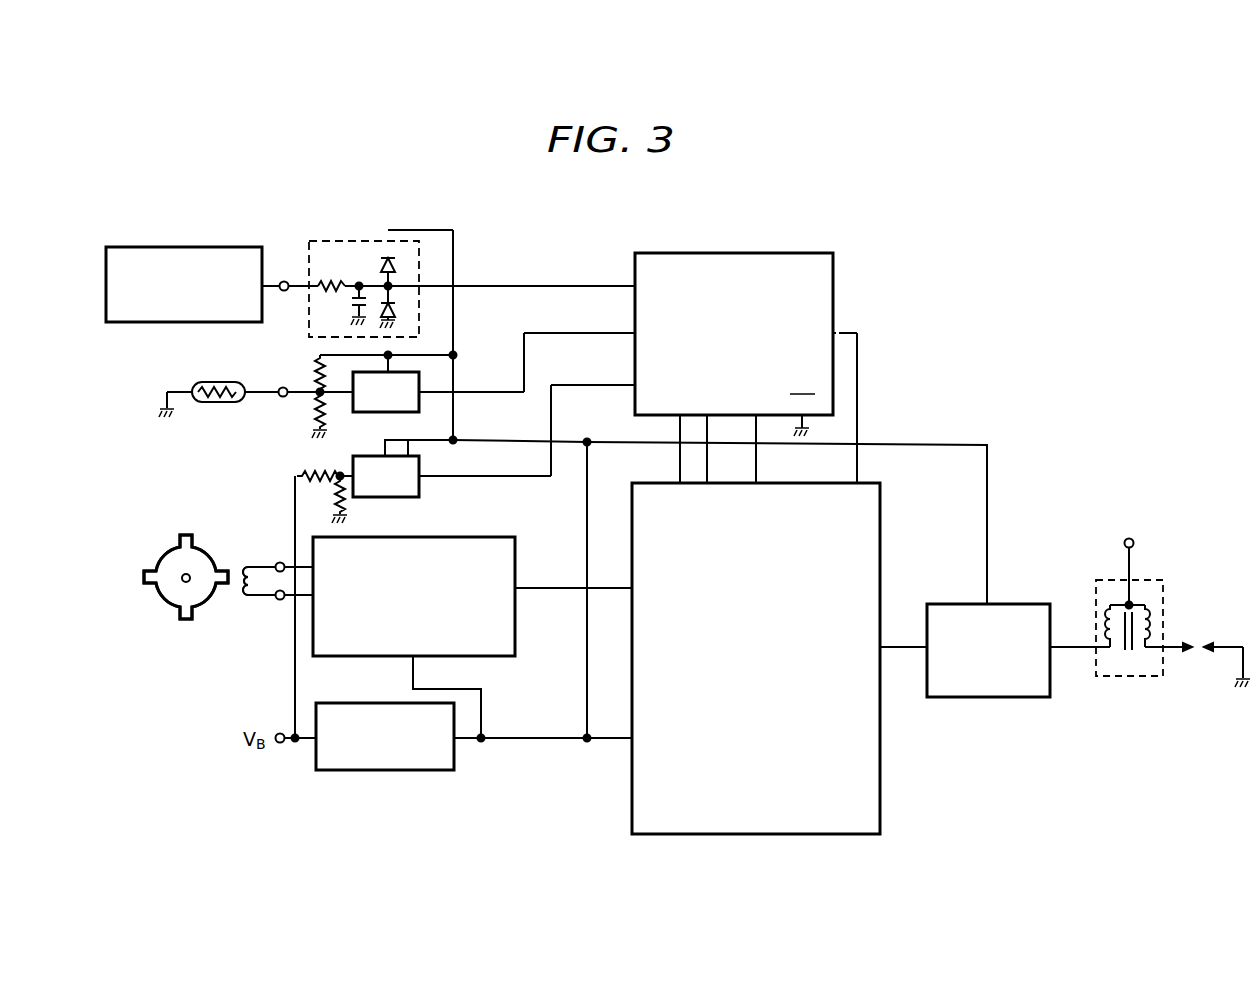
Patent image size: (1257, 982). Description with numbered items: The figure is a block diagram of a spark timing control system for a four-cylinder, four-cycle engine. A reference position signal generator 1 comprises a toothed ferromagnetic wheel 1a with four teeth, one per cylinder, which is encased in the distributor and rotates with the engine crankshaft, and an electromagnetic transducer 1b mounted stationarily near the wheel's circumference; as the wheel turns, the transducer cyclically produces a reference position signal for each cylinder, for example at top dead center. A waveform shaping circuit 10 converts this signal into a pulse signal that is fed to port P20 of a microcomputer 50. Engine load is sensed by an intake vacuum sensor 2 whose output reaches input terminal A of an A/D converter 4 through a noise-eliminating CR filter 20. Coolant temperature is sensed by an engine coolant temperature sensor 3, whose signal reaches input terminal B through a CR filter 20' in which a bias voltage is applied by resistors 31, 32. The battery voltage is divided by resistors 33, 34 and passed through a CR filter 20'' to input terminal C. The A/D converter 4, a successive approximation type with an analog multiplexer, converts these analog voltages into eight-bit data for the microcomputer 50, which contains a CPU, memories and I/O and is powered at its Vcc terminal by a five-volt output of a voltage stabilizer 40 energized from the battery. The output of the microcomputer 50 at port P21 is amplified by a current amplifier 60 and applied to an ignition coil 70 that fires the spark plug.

The reference position signal generator 1 is at (158, 602).
The toothed ferromagnetic wheel 1a is at (216, 546).
The electromagnetic transducer 1b is at (254, 562).
The intake vacuum sensor 2 is at (172, 247).
The engine coolant temperature sensor 3 is at (175, 427).
The A/D converter 4 is at (796, 253).
The waveform shaping circuit 10 is at (480, 537).
The CR filter 20 is at (362, 270).
The CR filter 20' is at (404, 371).
The CR filter 20'' is at (402, 455).
The resistor 31 is at (314, 370).
The resistor 32 is at (312, 423).
The resistor 33 is at (332, 472).
The resistor 34 is at (337, 498).
The voltage stabilizer 40 is at (340, 703).
The microcomputer 50 is at (880, 528).
The current amplifier 60 is at (1022, 603).
The ignition coil 70 is at (1154, 580).